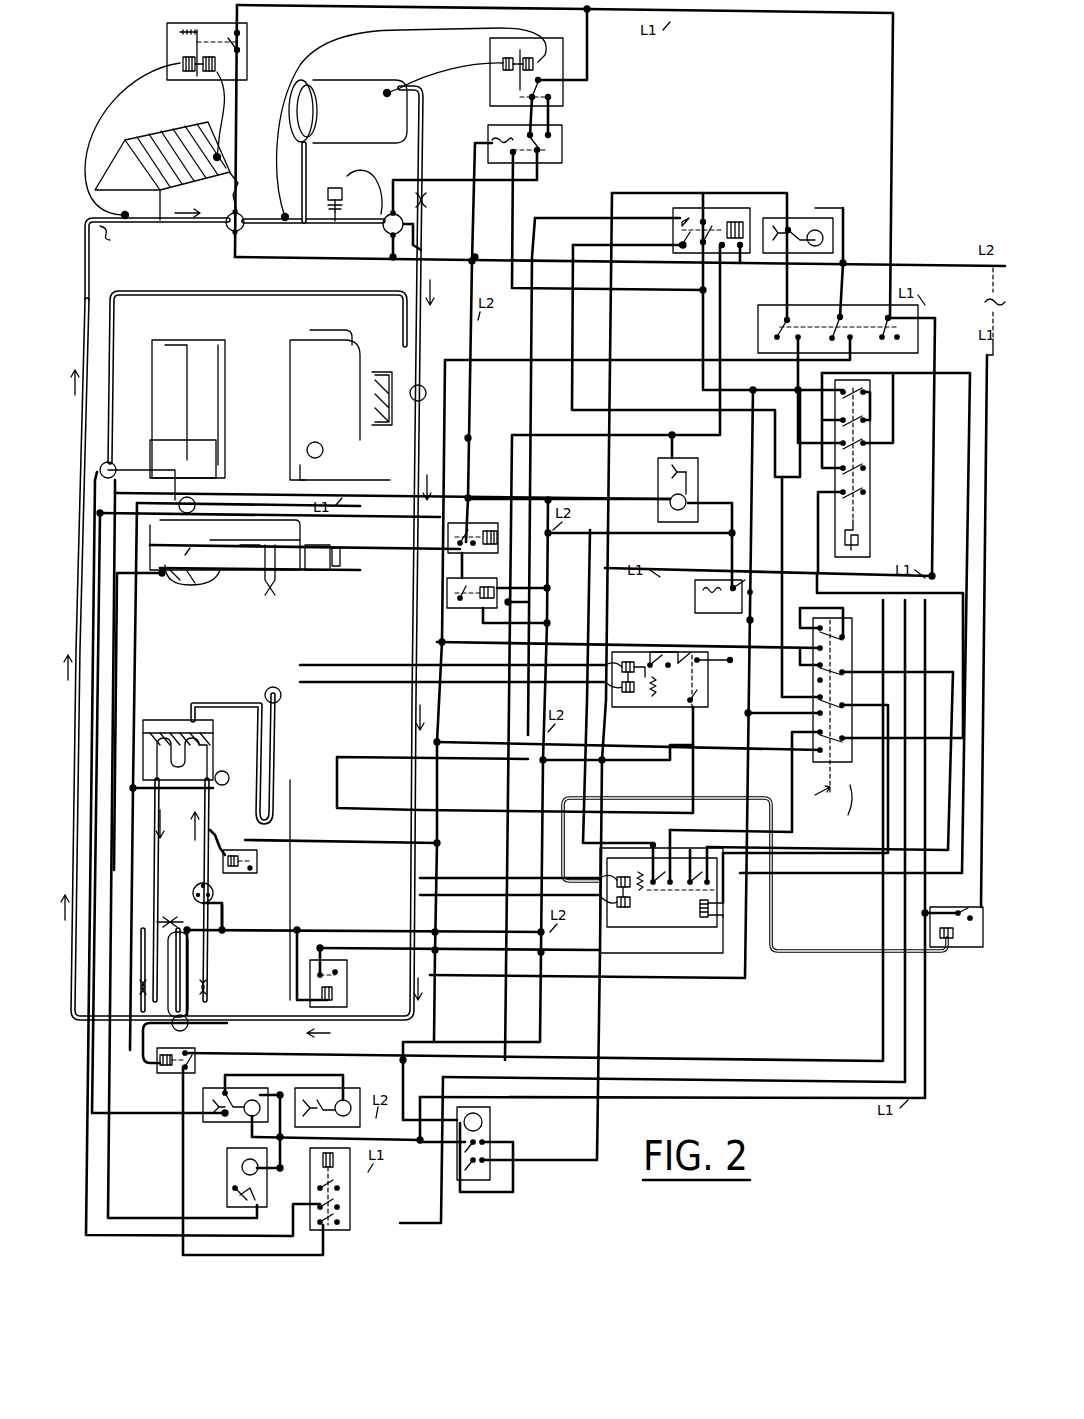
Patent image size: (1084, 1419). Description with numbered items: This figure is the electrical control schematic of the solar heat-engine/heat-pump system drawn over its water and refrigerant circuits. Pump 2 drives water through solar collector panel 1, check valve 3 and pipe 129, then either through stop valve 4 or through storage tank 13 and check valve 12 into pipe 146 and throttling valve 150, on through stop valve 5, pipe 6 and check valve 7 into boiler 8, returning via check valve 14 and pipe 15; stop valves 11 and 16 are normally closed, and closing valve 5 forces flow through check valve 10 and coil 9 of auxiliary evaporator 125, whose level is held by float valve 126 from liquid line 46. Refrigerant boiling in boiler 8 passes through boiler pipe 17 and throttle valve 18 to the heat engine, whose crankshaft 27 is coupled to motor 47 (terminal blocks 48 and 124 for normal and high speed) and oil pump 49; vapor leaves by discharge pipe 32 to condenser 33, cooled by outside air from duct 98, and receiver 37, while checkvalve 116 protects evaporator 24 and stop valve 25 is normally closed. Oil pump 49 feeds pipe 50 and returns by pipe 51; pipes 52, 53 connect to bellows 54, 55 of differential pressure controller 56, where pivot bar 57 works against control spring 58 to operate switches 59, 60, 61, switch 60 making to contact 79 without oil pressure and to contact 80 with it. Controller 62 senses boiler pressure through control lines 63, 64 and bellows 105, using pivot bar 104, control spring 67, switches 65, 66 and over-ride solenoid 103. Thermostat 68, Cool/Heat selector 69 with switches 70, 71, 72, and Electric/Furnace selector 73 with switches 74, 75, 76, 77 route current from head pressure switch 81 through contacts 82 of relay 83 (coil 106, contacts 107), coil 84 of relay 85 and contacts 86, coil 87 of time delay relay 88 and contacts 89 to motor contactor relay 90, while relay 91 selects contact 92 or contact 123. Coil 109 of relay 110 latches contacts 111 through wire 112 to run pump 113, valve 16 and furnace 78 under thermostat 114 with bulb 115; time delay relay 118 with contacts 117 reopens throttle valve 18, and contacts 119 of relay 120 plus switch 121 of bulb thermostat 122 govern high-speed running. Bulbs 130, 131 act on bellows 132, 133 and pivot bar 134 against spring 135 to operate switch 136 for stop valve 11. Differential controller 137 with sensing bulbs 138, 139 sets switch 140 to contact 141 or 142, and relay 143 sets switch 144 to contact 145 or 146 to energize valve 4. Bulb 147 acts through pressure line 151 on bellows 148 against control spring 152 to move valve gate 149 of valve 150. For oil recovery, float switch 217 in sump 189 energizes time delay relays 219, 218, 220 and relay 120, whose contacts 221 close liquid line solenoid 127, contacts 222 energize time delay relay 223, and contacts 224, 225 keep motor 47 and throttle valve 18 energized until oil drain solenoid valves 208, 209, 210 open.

The solar collector panel 1 is at (158, 132).
The pump 2 is at (110, 238).
The check valve 3 is at (242, 195).
The stop valve 4 is at (398, 213).
The stop valve 5 is at (427, 393).
The pipe 6 is at (296, 1035).
The check valve 7 is at (208, 985).
The boiler 8 is at (172, 718).
The coil 9 is at (408, 380).
The check valve 10 is at (408, 355).
The stop valve 11 is at (242, 230).
The check valve 12 is at (427, 205).
The storage tank 13 is at (362, 76).
The check valve 14 is at (164, 974).
The pipe 15 is at (73, 1020).
The valve 16 is at (172, 1028).
The boiler pipe 17 is at (276, 750).
The throttle valve 18 is at (265, 695).
The evaporator 24 is at (345, 323).
The stop valve 25 is at (268, 588).
The crankshaft 27 is at (225, 543).
The discharge pipe 32 is at (345, 628).
The condenser 33 is at (166, 335).
The receiver 37 is at (212, 445).
The liquid line 46 is at (243, 290).
The motor 47 is at (317, 568).
The terminal block 48 is at (341, 571).
The oil pump 49 is at (221, 598).
The pipe 50 is at (255, 535).
The pipe 51 is at (189, 598).
The pipe 52 is at (260, 648).
The pipe 53 is at (205, 645).
The bellows 54 is at (622, 660).
The bellows 55 is at (622, 695).
The differential pressure controller 56 is at (660, 697).
The pivot bar 57 is at (645, 660).
The control spring 58 is at (653, 697).
The switch 59 is at (652, 655).
The switch 60 is at (684, 655).
The switch 61 is at (686, 708).
The differential pressure controller 62 is at (680, 928).
The control line 63 is at (292, 782).
The control line 64 is at (308, 652).
The switch 65 is at (657, 855).
The switch 66 is at (694, 865).
The control spring 67 is at (641, 892).
The thermostat 68 is at (870, 548).
The Cool/Heat selector switch 69 is at (880, 305).
The switch 70 is at (783, 324).
The switch 71 is at (836, 323).
The switch 72 is at (882, 323).
The selector switch 73 is at (856, 630).
The switch 74 is at (848, 648).
The switch 75 is at (848, 680).
The switch 76 is at (848, 713).
The switch 77 is at (848, 748).
The furnace 78 is at (220, 900).
The contact 79 is at (700, 655).
The contact 80 is at (732, 235).
The head pressure switch 81 is at (965, 948).
The contacts 82 is at (707, 215).
The relay 83 is at (688, 208).
The coil 84 is at (698, 588).
The relay 85 is at (697, 605).
The contacts 86 is at (750, 587).
The coil 87 is at (668, 508).
The time delay relay 88 is at (698, 485).
The contacts 89 is at (690, 468).
The motor contactor relay 90 is at (482, 607).
The relay 91 is at (492, 545).
The contact 92 is at (448, 540).
The duct 98 is at (198, 508).
The over-ride solenoid 103 is at (705, 918).
The pivot bar 104 is at (675, 905).
The bellows 105 is at (624, 910).
The coil 106 is at (735, 215).
The contacts 107 is at (680, 244).
The coil 109 is at (335, 990).
The relay 110 is at (340, 1000).
The contacts 111 is at (340, 968).
The wire 112 is at (487, 978).
The pump 113 is at (172, 915).
The thermostat 114 is at (254, 861).
The bulb 115 is at (226, 837).
The checkvalve 116 is at (312, 338).
The contacts 117 is at (790, 225).
The time delay relay 118 is at (828, 225).
The contacts 119 is at (323, 1256).
The relay 120 is at (340, 1230).
The switch 121 is at (198, 1060).
The bulb thermostat 122 is at (160, 1072).
The contact 123 is at (476, 532).
The terminal block 124 is at (350, 548).
The auxiliary evaporator 125 is at (395, 338).
The float valve 126 is at (410, 350).
The liquid line solenoid 127 is at (122, 456).
The pipe 129 is at (300, 228).
The bulb 130 is at (222, 154).
The bulb 131 is at (130, 206).
The bellows 132 is at (220, 53).
The bellows 133 is at (186, 56).
The pivot bar 134 is at (197, 30).
The spring 135 is at (178, 22).
The switch 136 is at (241, 38).
The differential controller 137 is at (573, 35).
The sensing bulb 138 is at (406, 124).
The sensing bulb 139 is at (386, 88).
The switch 140 is at (555, 93).
The contact 141 is at (520, 98).
The contact 142 is at (553, 100).
The relay 143 is at (550, 160).
The switch 144 is at (553, 150).
The contact 145 is at (520, 130).
The pipe 146 is at (420, 230).
The bulb 147 is at (423, 248).
The bellows 148 is at (325, 190).
The valve gate 149 is at (360, 226).
The valve 150 is at (335, 228).
The pressure line 151 is at (367, 186).
The control spring 152 is at (353, 209).
The sump 189 is at (170, 587).
The oil drain solenoid valve 208 is at (313, 442).
The oil drain solenoid valve 209 is at (356, 478).
The oil drain solenoid valve 210 is at (225, 770).
The float switch 217 is at (150, 568).
The time delay relay 218 is at (225, 1122).
The time delay relay 219 is at (365, 1088).
The time delay relay 220 is at (227, 1188).
The contacts 221 is at (343, 1207).
The contacts 222 is at (343, 1185).
The time delay relay 223 is at (495, 1108).
The contacts 224 is at (500, 1145).
The contacts 225 is at (500, 1165).